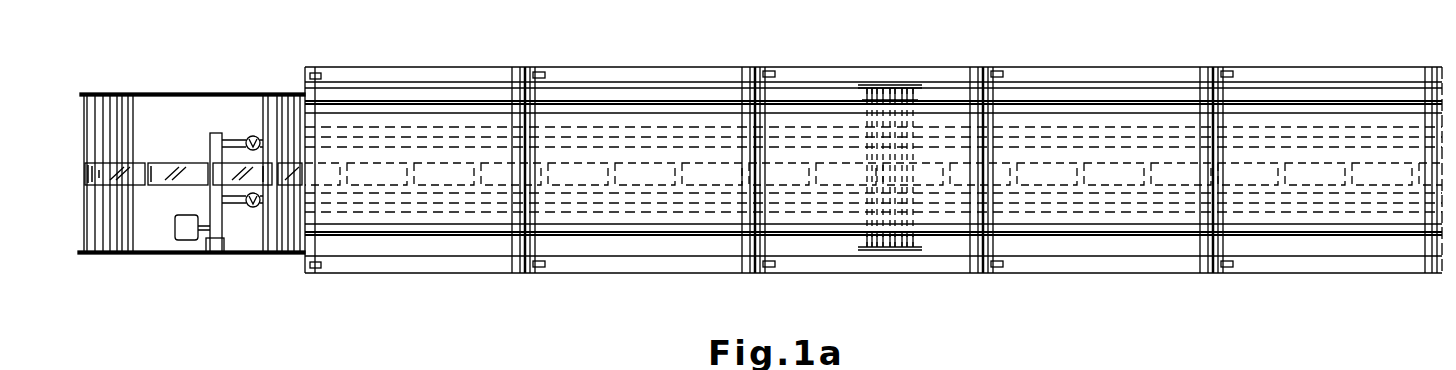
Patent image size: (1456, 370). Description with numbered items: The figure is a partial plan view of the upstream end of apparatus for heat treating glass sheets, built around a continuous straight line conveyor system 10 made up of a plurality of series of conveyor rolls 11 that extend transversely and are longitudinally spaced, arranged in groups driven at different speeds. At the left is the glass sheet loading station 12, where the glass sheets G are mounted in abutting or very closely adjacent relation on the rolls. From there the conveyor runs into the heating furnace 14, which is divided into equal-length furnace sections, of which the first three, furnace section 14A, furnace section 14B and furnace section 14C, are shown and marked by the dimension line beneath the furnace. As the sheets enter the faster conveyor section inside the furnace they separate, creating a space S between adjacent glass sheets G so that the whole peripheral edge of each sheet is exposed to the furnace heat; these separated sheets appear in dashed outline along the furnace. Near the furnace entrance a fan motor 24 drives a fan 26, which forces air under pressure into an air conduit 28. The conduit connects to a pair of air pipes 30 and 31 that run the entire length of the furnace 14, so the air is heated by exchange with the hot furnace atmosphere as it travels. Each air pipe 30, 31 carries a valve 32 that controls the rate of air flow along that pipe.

The conveyor system 10 is at (76, 88).
The conveyor rolls 11 is at (108, 248).
The glass sheet loading station 12 is at (188, 86).
The heating furnace 14 is at (614, 58).
The furnace section 14A is at (750, 306).
The furnace section 14B is at (1205, 306).
The furnace section 14C is at (1439, 304).
The fan motor 24 is at (179, 215).
The fan 26 is at (221, 249).
The air conduit 28 is at (209, 140).
The air pipe 30 is at (229, 137).
The air pipe 31 is at (247, 207).
The valve 32 is at (253, 136).
The glass sheets G is at (431, 161).
The space S is at (481, 188).